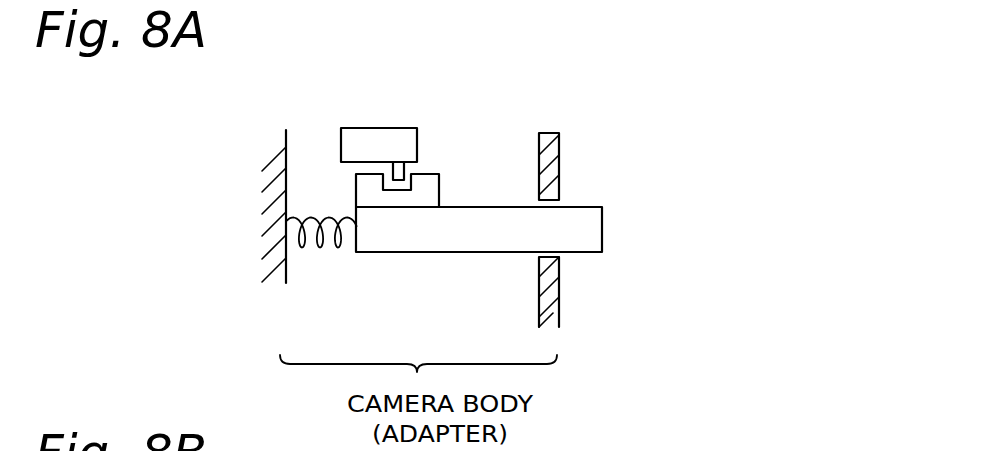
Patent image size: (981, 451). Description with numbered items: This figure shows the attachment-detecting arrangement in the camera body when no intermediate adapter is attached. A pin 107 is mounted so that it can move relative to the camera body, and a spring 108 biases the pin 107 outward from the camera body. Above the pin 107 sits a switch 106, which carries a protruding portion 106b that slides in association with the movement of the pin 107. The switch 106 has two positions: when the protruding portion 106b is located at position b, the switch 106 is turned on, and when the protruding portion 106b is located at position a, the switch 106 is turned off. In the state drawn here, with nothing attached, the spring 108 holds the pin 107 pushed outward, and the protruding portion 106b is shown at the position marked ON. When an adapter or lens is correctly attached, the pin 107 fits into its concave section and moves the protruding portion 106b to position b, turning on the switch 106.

The switch 106 is at (340, 142).
The protruding portion 106b is at (405, 168).
The pin 107 is at (443, 253).
The spring 108 is at (325, 257).